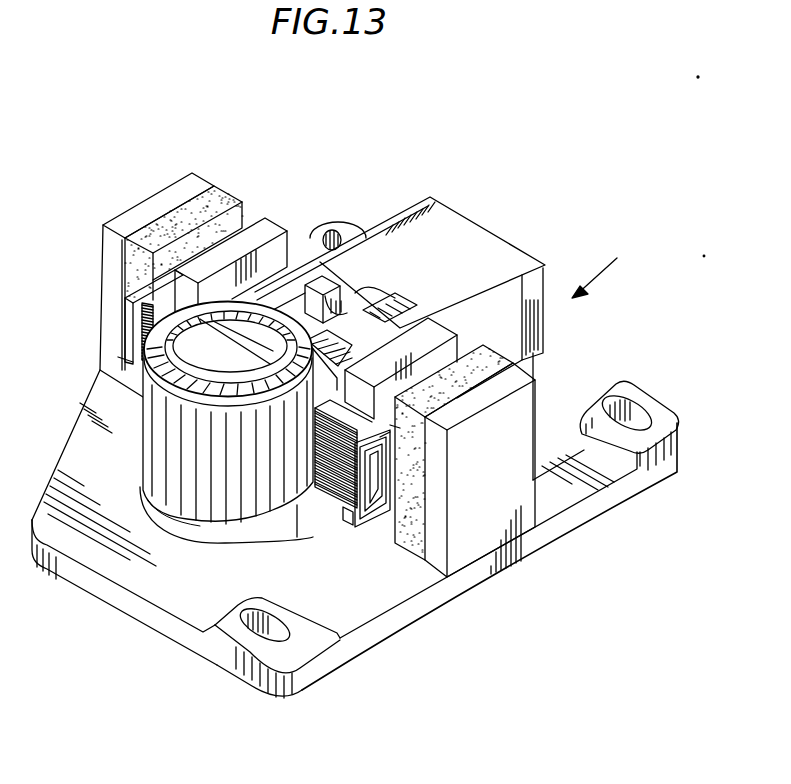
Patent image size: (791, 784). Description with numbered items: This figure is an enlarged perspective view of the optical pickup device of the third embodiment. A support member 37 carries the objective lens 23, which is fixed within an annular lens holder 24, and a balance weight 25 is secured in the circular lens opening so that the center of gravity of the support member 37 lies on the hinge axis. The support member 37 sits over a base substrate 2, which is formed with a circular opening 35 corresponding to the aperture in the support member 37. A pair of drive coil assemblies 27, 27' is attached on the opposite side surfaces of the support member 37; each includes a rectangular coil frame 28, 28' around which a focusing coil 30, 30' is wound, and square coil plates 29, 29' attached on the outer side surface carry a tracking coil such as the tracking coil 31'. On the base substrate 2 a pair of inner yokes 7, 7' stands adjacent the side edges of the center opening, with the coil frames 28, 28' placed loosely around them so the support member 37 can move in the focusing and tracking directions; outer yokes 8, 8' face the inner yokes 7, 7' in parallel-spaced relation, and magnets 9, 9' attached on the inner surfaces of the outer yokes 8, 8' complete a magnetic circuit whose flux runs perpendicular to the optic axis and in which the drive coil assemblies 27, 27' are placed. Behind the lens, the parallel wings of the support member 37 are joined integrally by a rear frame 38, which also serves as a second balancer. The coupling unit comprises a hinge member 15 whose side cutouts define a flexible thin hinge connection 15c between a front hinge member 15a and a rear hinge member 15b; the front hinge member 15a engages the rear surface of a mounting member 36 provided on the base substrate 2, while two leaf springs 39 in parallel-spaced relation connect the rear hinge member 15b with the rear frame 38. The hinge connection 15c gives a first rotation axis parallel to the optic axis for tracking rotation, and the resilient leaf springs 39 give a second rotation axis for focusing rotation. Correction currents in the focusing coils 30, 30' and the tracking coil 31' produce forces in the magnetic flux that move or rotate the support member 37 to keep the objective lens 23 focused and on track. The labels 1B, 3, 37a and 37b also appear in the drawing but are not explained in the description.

The section view indicator 1B is at (607, 275).
The base substrate 2 is at (222, 657).
The mounting holes 3 is at (282, 638).
The inner yoke 7 is at (231, 244).
The inner yoke 7' is at (424, 364).
The outer yoke 8 is at (157, 245).
The outer yoke 8' is at (480, 486).
The magnet 9 is at (186, 217).
The magnet 9' is at (454, 487).
The hinge member 15 is at (318, 283).
The front hinge member 15a is at (408, 312).
The rear hinge member 15b is at (372, 342).
The hinge connection 15c is at (338, 240).
The objective lens 23 is at (203, 353).
The lens holder 24 is at (180, 412).
The balance weight 25 is at (232, 522).
The drive coil assembly 27 is at (86, 305).
The drive coil assembly 27' is at (373, 548).
The rectangular coil frame 28 is at (117, 298).
The rectangular coil frame 28' is at (442, 442).
The square coil plate 29 is at (92, 351).
The square coil plate 29' is at (437, 463).
The focusing coil 30 is at (102, 332).
The focusing coil 30' is at (343, 490).
The tracking coil 31' is at (422, 481).
The circular opening 35 is at (186, 520).
The mounting member 36 is at (332, 352).
The support member 37 is at (143, 432).
The front wall 37a is at (297, 505).
The side wall 37b is at (540, 335).
The rear frame 38 is at (526, 268).
The leaf spring 39 is at (480, 235).